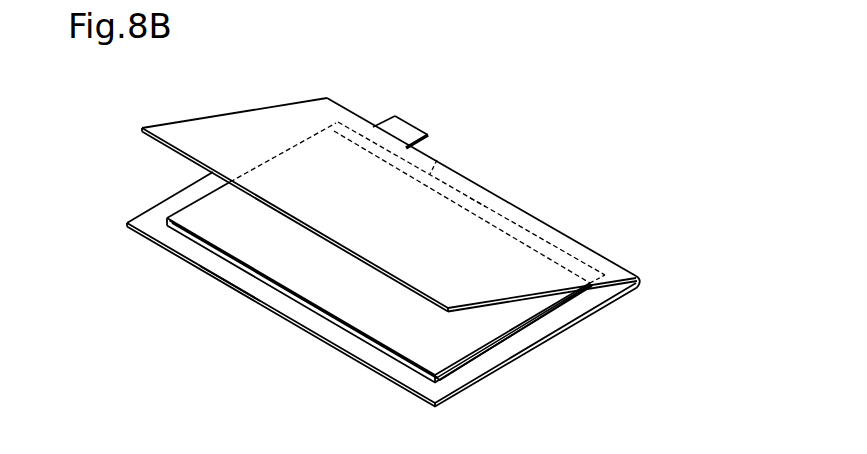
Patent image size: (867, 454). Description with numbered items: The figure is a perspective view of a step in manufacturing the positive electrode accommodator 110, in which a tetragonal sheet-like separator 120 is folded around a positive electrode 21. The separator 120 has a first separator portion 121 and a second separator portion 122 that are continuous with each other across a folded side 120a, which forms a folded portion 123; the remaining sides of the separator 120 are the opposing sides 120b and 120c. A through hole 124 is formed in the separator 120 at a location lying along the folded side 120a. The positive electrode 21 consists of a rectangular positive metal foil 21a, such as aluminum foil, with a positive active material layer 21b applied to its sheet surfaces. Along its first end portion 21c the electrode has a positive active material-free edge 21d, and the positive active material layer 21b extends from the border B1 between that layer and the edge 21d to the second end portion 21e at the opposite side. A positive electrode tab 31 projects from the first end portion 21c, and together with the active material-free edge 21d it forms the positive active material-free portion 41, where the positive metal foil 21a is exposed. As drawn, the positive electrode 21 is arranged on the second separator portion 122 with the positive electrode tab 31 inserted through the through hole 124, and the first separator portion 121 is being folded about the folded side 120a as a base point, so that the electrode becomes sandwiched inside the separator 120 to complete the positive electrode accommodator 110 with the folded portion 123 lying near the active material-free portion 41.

The positive electrode accommodator 110 is at (563, 142).
The separator 120 is at (587, 316).
The first separator portion 121 is at (230, 128).
The second separator portion 122 is at (505, 353).
The folded portion 123 is at (707, 271).
The folded side 120a is at (640, 281).
The opposing side 120b is at (175, 152).
The opposing side 120c is at (229, 288).
The through hole 124 is at (373, 126).
The positive electrode tab 31 is at (407, 131).
The positive active material-free portion 41 is at (485, 120).
The positive electrode 21 is at (546, 316).
The positive metal foil 21a is at (462, 365).
The positive active material layer 21b is at (390, 333).
The first end portion 21c is at (538, 228).
The positive active material-free edge 21d is at (437, 160).
The second end portion 21e is at (316, 307).
The border B1 is at (478, 207).